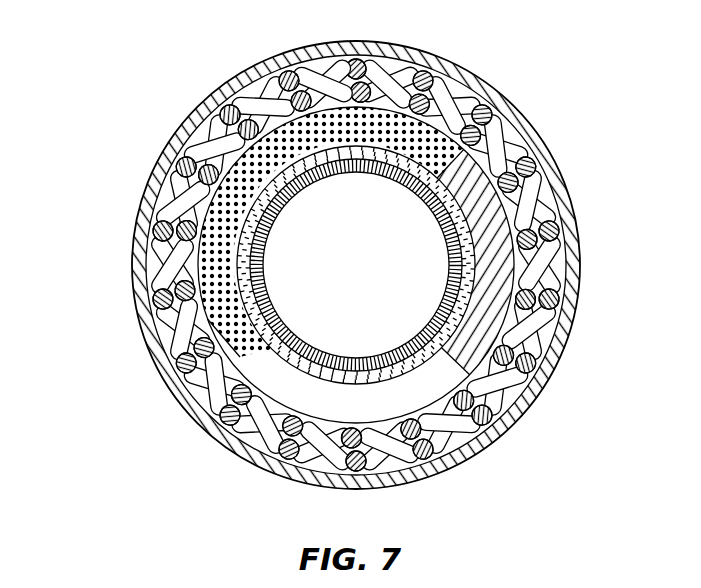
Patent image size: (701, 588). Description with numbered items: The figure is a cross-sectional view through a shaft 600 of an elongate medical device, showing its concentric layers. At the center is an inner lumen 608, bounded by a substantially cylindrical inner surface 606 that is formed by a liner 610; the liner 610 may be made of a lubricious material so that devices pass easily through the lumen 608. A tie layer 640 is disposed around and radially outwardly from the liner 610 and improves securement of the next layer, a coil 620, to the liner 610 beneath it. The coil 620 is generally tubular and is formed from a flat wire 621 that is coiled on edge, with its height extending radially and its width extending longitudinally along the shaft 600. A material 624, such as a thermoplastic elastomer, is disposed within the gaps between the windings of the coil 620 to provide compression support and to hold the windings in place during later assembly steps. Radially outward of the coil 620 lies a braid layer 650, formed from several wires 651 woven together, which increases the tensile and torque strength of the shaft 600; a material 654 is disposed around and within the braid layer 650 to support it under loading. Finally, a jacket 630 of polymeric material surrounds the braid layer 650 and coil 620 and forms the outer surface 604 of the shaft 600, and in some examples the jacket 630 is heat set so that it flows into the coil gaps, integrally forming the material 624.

The shaft 600 is at (526, 48).
The outer surface 604 is at (130, 252).
The inner surface 606 is at (266, 231).
The inner lumen 608 is at (313, 220).
The liner 610 is at (270, 397).
The coil 620 is at (495, 265).
The flat wire 621 is at (413, 393).
The material 624 is at (260, 85).
The jacket 630 is at (304, 253).
The tie layer 640 is at (220, 312).
The braid layer 650 is at (262, 410).
The wires 651 is at (265, 413).
The material 654 is at (325, 63).